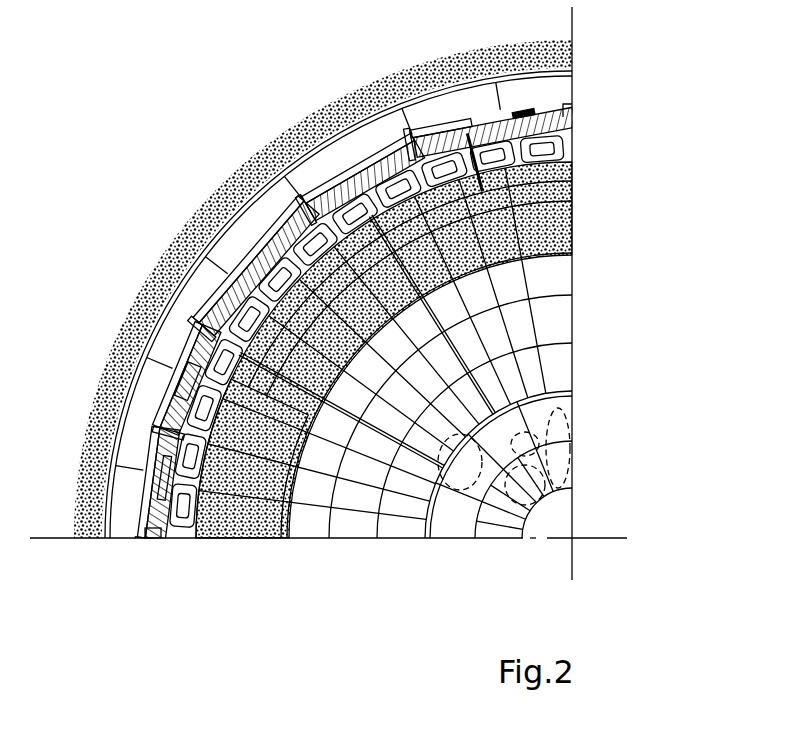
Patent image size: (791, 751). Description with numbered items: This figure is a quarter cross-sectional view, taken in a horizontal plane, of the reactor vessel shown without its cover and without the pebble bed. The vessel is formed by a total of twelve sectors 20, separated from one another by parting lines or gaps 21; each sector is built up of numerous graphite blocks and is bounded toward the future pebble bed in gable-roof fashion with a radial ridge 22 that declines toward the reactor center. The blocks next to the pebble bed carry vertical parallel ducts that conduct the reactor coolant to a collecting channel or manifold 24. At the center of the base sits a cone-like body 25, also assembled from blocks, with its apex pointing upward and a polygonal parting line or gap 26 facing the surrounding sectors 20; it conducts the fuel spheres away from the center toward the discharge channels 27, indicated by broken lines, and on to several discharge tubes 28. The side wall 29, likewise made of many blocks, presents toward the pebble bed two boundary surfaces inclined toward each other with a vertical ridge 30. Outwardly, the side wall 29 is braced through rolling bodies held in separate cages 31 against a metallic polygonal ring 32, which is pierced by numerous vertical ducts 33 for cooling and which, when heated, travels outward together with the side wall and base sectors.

The sectors 20 is at (432, 387).
The parting lines or gaps 21 is at (348, 540).
The radial ridge 22 is at (407, 497).
The collecting channel or manifold 24 is at (235, 240).
The cone-like body 25 is at (572, 508).
The polygonal parting line or gap 26 is at (432, 497).
The discharge channels 27 is at (482, 497).
The discharge tubes 28 is at (518, 503).
The side wall 29 is at (267, 539).
The vertical ridge 30 is at (305, 480).
The cages 31 is at (182, 540).
The metallic polygonal ring 32 is at (167, 455).
The vertical ducts 33 is at (165, 430).